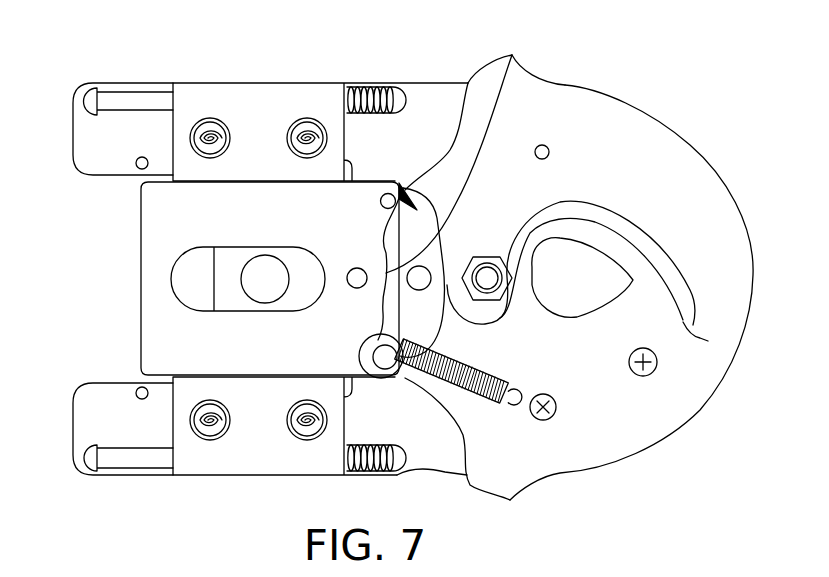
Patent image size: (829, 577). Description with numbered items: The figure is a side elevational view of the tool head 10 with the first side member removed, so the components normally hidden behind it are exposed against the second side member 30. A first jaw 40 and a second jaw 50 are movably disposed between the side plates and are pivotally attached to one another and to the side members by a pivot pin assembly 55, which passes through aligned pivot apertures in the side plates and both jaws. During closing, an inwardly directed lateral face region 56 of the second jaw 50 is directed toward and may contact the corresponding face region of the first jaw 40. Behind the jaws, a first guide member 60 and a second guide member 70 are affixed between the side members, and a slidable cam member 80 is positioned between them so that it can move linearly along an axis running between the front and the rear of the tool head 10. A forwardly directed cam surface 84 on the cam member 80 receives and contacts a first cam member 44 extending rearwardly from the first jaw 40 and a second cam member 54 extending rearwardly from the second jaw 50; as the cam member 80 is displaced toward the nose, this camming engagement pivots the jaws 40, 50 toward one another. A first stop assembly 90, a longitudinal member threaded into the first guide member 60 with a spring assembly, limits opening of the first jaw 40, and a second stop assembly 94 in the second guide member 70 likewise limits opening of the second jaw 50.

The tool head 10 is at (702, 107).
The second side member 30 is at (437, 110).
The first jaw 40 is at (732, 222).
The first cam member 44 is at (410, 192).
The second jaw 50 is at (717, 363).
The second cam member 54 is at (400, 388).
The pivot pin assembly 55 is at (498, 316).
The lateral face region 56 is at (708, 341).
The first guide member 60 is at (263, 115).
The second guide member 70 is at (258, 440).
The slidable cam member 80 is at (141, 205).
The cam surface 84 is at (518, 74).
The first stop assembly 90 is at (140, 103).
The second stop assembly 94 is at (145, 459).